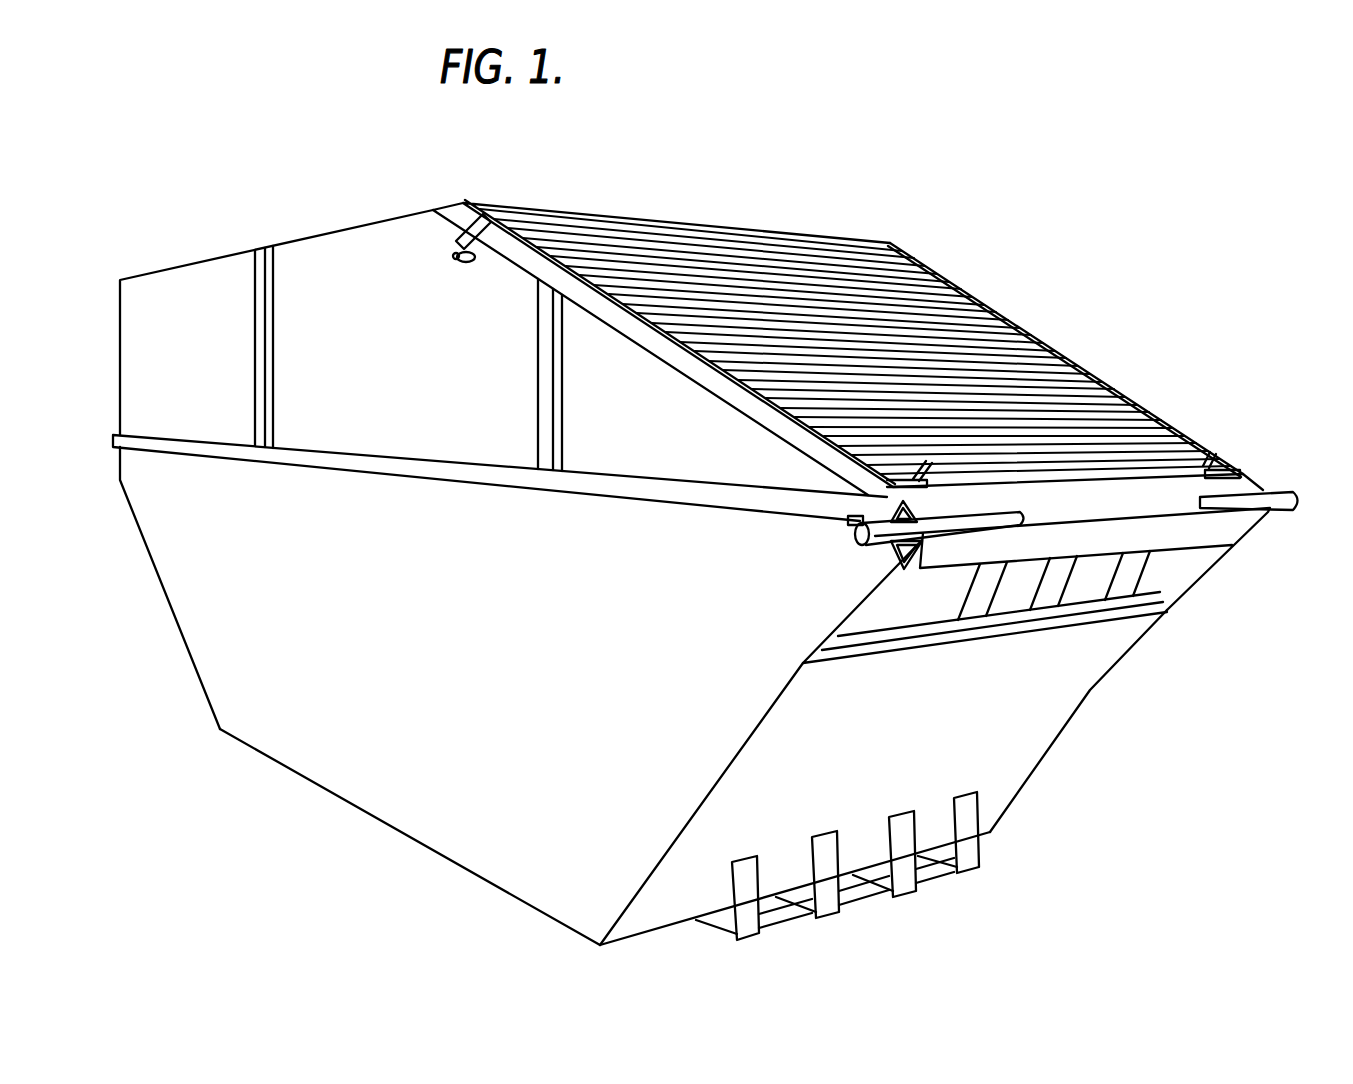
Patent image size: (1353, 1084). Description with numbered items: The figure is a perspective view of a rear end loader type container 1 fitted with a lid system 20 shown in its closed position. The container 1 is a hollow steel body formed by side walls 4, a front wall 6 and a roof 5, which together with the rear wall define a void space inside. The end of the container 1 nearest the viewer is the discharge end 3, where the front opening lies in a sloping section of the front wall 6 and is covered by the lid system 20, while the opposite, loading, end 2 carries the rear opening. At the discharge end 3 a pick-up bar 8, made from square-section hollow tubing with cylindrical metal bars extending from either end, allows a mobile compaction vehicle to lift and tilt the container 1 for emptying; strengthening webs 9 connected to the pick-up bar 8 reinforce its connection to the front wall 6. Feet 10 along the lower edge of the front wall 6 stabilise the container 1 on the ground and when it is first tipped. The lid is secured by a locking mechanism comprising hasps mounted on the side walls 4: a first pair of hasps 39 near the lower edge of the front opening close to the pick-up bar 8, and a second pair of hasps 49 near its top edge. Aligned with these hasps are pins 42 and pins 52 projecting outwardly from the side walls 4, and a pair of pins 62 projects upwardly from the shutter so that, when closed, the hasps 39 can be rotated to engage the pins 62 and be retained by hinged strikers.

The container 1 is at (252, 833).
The loading end 2 is at (157, 616).
The discharge end 3 is at (1095, 319).
The side walls 4 is at (456, 824).
The roof 5 is at (328, 228).
The front wall 6 is at (1047, 705).
The pick-up bar 8 is at (1283, 497).
The strengthening webs 9 is at (1200, 563).
The feet 10 is at (961, 853).
The lid system 20 is at (817, 222).
The first pair of hasps 39 is at (843, 450).
The pins 42 is at (850, 527).
The second pair of hasps 49 is at (463, 238).
The pins 52 is at (460, 260).
The pins 62 is at (1213, 462).